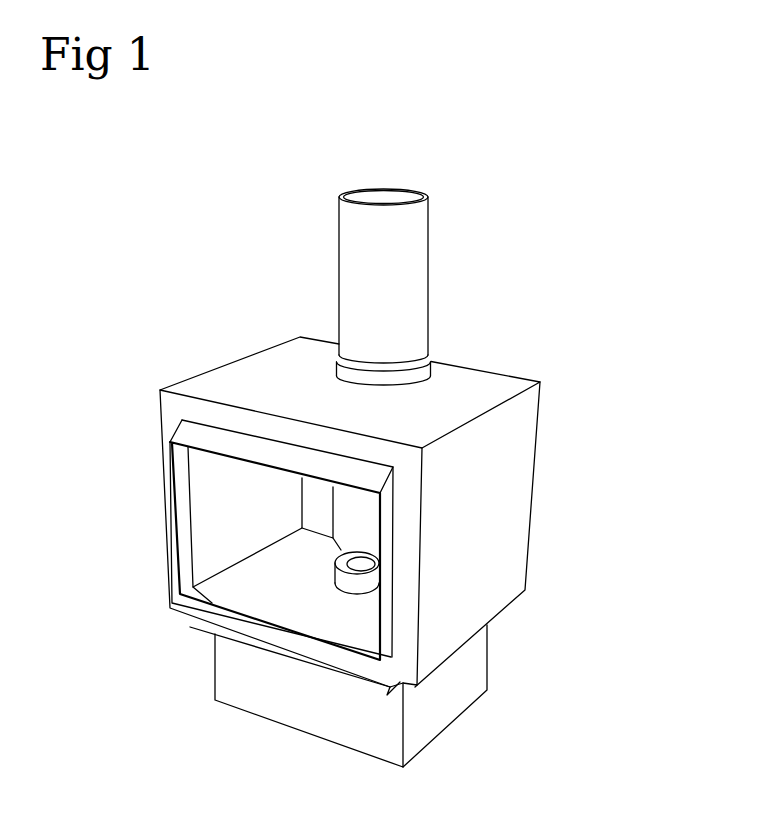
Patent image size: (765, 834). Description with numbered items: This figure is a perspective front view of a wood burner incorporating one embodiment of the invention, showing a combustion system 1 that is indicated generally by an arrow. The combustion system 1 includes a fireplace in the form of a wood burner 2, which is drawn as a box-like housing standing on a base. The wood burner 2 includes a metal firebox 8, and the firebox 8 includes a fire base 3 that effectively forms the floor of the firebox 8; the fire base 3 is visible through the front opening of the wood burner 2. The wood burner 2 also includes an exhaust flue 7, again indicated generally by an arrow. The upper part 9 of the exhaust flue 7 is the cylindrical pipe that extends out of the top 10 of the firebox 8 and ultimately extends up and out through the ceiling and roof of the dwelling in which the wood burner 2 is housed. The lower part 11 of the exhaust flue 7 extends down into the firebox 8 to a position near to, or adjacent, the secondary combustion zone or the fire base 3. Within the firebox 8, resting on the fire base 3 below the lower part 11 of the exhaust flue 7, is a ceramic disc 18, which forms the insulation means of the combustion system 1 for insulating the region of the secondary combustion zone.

The combustion system 1 is at (139, 306).
The wood burner 2 is at (157, 404).
The fire base 3 is at (252, 588).
The exhaust flue 7 is at (466, 305).
The firebox 8 is at (510, 567).
The upper part of the exhaust flue 9 is at (365, 267).
The top of the firebox 10 is at (467, 383).
The lower part of the exhaust flue 11 is at (355, 528).
The ceramic disc 18 is at (365, 582).